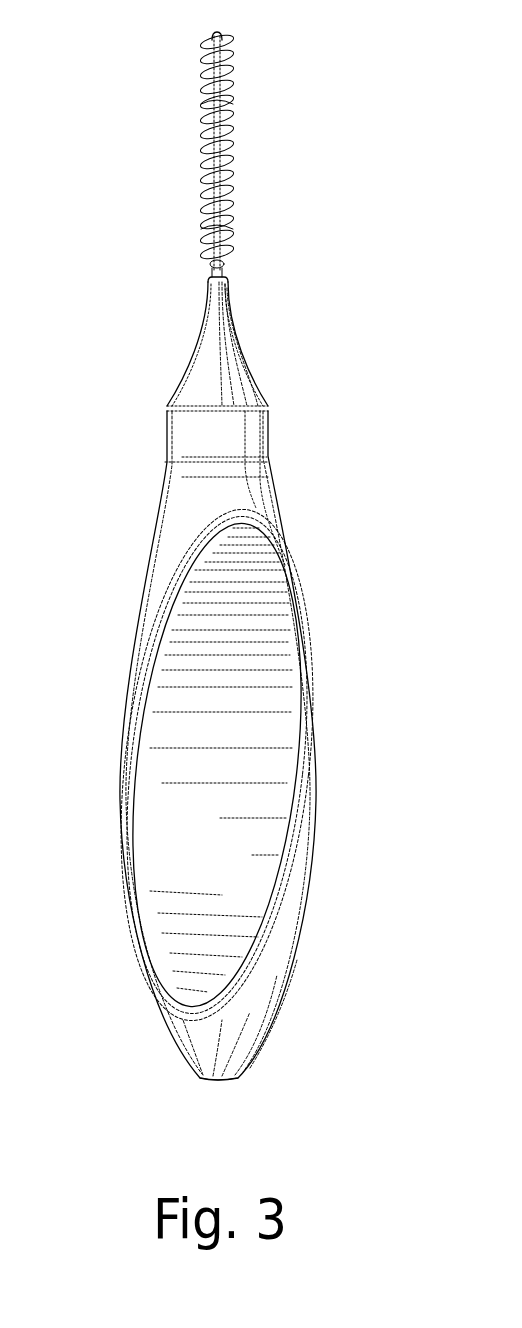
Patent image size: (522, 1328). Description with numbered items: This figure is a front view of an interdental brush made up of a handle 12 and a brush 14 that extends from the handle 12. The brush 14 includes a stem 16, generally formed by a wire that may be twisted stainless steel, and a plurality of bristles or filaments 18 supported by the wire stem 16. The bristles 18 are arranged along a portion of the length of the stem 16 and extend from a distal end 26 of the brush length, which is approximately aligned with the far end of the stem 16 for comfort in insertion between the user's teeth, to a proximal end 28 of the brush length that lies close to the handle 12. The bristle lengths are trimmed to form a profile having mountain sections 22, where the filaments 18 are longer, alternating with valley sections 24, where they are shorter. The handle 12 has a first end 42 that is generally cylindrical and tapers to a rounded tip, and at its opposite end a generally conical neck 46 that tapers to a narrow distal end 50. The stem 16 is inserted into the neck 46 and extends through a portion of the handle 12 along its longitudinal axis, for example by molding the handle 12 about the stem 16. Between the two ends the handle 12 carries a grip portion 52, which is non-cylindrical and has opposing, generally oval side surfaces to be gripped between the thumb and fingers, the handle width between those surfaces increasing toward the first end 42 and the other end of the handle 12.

The handle portion 12 is at (217, 693).
The brush 14 is at (211, 153).
The stem 16 is at (222, 164).
The bristles 18 is at (225, 78).
The mountain sections 22 is at (205, 228).
The valley sections 24 is at (206, 106).
The distal end of the brush length 26 is at (213, 40).
The proximal end of the brush length 28 is at (214, 263).
The first end 42 is at (200, 1060).
The neck 46 is at (272, 344).
The distal end of the neck 50 is at (229, 280).
The grip portion 52 is at (232, 630).